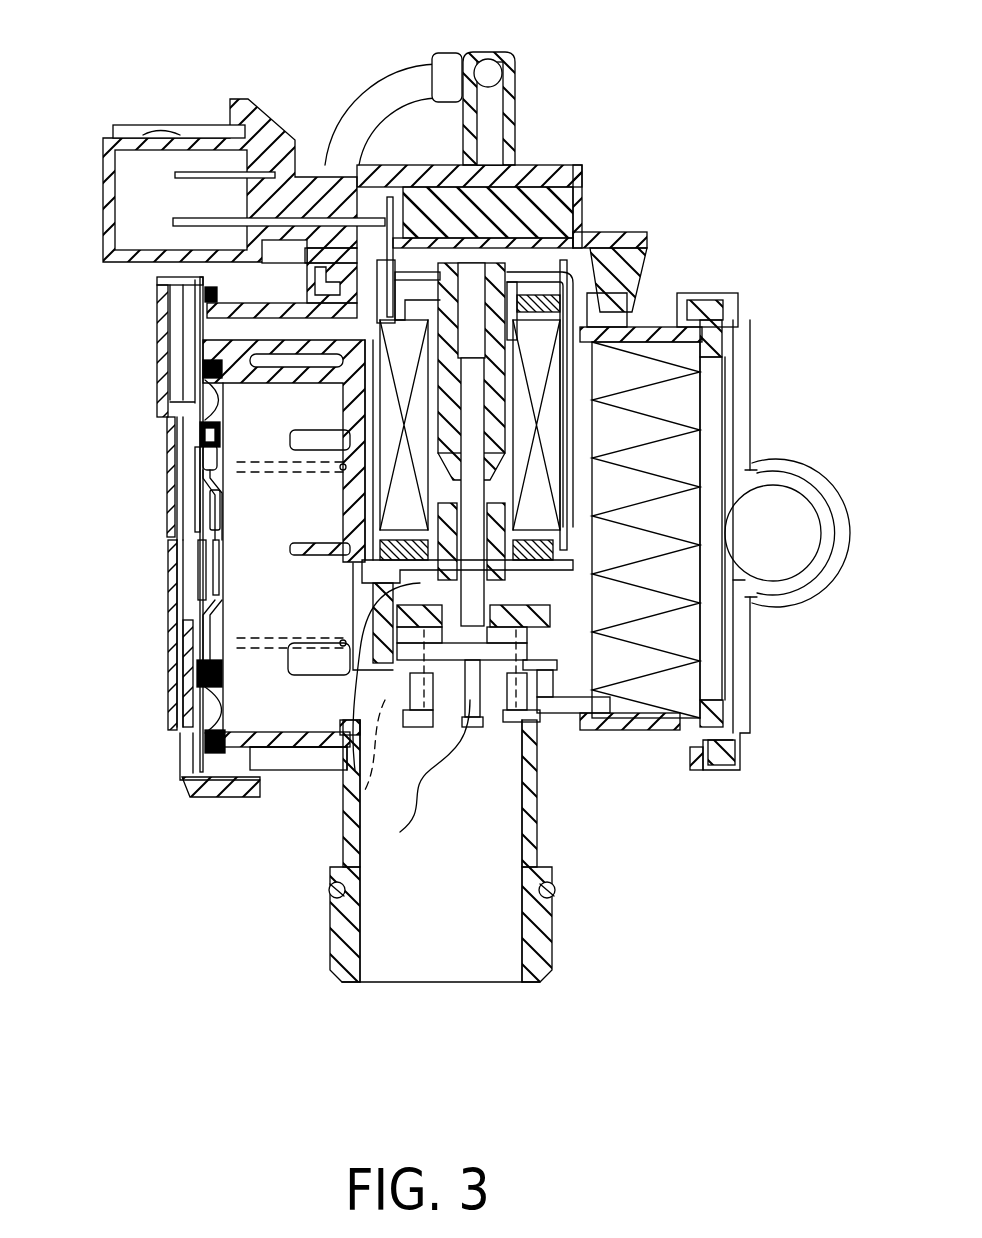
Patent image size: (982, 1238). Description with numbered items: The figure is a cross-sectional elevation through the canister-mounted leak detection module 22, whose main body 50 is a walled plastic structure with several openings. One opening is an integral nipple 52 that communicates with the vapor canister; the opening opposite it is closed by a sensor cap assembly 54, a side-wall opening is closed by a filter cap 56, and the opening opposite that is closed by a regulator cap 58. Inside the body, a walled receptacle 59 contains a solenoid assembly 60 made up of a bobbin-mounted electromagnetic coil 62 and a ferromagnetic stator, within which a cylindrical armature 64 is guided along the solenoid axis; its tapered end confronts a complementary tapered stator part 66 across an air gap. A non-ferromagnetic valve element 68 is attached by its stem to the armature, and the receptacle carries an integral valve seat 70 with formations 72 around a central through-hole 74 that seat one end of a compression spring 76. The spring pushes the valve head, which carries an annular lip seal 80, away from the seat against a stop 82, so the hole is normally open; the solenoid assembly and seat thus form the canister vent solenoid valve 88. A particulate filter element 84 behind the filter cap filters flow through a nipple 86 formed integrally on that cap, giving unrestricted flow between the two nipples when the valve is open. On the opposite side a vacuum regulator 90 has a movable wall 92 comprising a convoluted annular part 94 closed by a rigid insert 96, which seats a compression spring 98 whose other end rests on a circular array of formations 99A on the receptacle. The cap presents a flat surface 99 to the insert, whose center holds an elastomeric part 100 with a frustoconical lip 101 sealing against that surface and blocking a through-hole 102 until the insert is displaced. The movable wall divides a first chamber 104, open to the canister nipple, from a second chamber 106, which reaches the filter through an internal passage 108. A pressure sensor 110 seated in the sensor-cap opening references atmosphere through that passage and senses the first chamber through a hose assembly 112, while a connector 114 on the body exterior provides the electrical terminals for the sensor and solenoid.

The leak detection module 22 is at (777, 677).
The main body 50 is at (547, 730).
The nipple 52 is at (470, 968).
The sensor cap assembly 54 is at (580, 187).
The filter cap 56 is at (737, 320).
The regulator cap 58 is at (160, 320).
The walled receptacle 59 is at (357, 510).
The solenoid assembly 60 is at (640, 246).
The electromagnetic coil 62 is at (623, 330).
The armature 64 is at (517, 230).
The stator part 66 is at (593, 513).
The valve element 68 is at (450, 650).
The valve seat 70 is at (560, 730).
The formations 72 is at (400, 832).
The through-hole 74 is at (478, 715).
The compression spring 76 is at (345, 798).
The lip seal 80 is at (345, 772).
The stop 82 is at (325, 672).
The filter element 84 is at (703, 450).
The nipple 86 is at (795, 540).
The canister vent solenoid valve 88 is at (500, 745).
The vacuum regulator 90 is at (153, 637).
The movable wall 92 is at (210, 693).
The annular part 94 is at (193, 757).
The insert 96 is at (197, 683).
The compression spring 98 is at (248, 470).
The flat surface 99 is at (177, 553).
The formations 99A is at (307, 440).
The part 100 is at (238, 592).
The frustoconical lip 101 is at (195, 606).
The through-hole 102 is at (237, 550).
The first chamber 104 is at (283, 713).
The second chamber 106 is at (190, 457).
The internal passage 108 is at (557, 263).
The pressure sensor 110 is at (510, 200).
The hose assembly 112 is at (392, 92).
The connector 114 is at (150, 125).